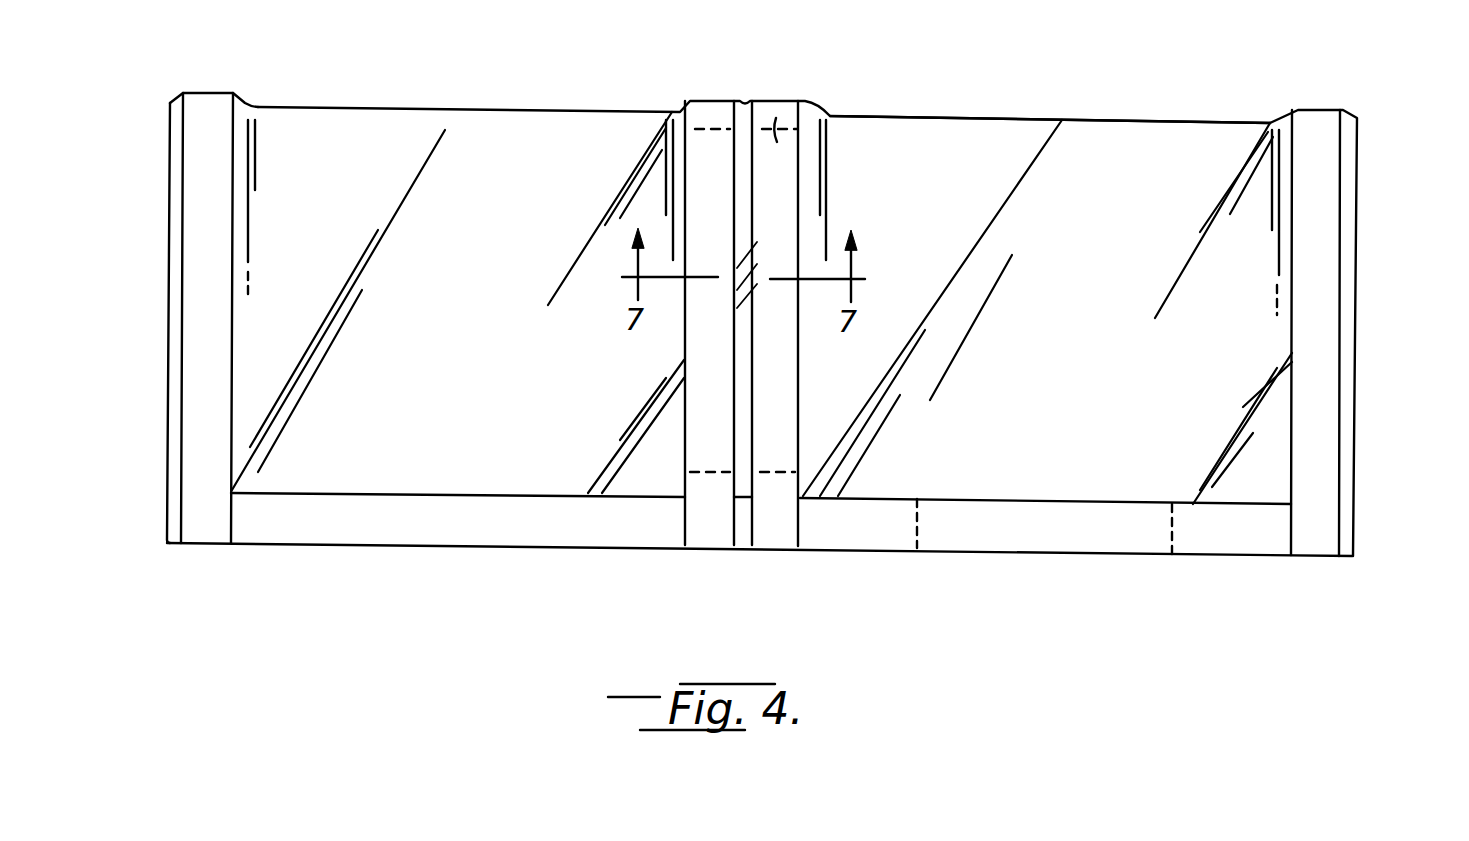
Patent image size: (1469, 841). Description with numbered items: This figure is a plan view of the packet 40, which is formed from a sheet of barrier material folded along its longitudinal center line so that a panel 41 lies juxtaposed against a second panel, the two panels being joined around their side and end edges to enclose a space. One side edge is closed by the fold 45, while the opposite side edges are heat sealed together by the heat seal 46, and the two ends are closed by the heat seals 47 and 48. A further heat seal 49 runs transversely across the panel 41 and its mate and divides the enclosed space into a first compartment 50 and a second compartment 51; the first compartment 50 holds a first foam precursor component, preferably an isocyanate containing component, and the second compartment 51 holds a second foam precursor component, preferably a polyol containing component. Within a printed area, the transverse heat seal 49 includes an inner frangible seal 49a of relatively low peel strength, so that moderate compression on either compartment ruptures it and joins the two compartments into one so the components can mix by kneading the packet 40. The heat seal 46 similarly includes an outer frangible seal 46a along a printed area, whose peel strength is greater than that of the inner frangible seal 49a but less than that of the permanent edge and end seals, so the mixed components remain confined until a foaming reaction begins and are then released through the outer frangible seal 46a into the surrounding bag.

The packet 40 is at (546, 100).
The panel 41 is at (870, 150).
The fold 45 is at (1115, 122).
The heat seal 46 is at (852, 545).
The second frangible seal 46a is at (1116, 545).
The heat seal 47 is at (1325, 243).
The heat seal 48 is at (190, 306).
The heat seal 49 is at (700, 425).
The frangible seal 49a is at (745, 96).
The first compartment 50 is at (360, 138).
The second compartment 51 is at (1185, 153).